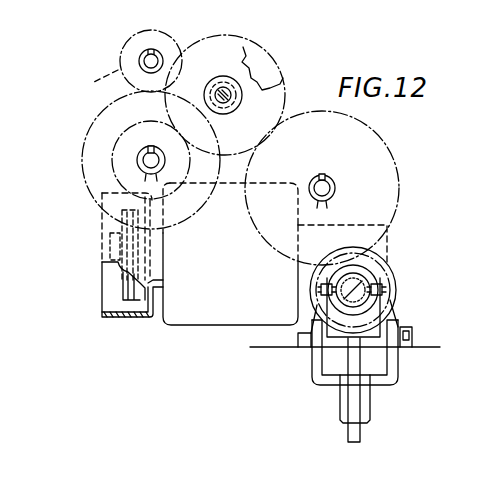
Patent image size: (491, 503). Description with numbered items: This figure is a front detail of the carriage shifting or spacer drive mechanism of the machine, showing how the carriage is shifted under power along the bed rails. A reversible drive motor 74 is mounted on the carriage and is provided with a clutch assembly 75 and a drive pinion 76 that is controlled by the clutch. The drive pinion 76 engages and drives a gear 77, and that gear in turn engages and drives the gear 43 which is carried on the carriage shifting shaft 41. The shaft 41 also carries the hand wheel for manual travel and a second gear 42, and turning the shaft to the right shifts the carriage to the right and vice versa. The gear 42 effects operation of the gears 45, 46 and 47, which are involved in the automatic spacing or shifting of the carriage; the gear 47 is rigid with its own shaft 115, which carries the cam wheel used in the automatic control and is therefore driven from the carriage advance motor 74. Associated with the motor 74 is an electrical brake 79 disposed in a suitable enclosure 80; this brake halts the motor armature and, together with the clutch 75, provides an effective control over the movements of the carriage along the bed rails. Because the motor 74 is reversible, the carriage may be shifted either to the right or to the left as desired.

The shaft 115 is at (143, 58).
The gear 47 is at (94, 87).
The gear 43 is at (274, 63).
The gear 42 is at (275, 83).
The shaft 41 is at (233, 99).
The gear 46 is at (83, 178).
The gear 45 is at (119, 138).
The gear 77 is at (401, 181).
The drive motor 74 is at (222, 318).
The enclosure 80 is at (102, 297).
The electrical brake 79 is at (122, 282).
The clutch assembly 75 is at (400, 271).
The drive pinion 76 is at (384, 256).